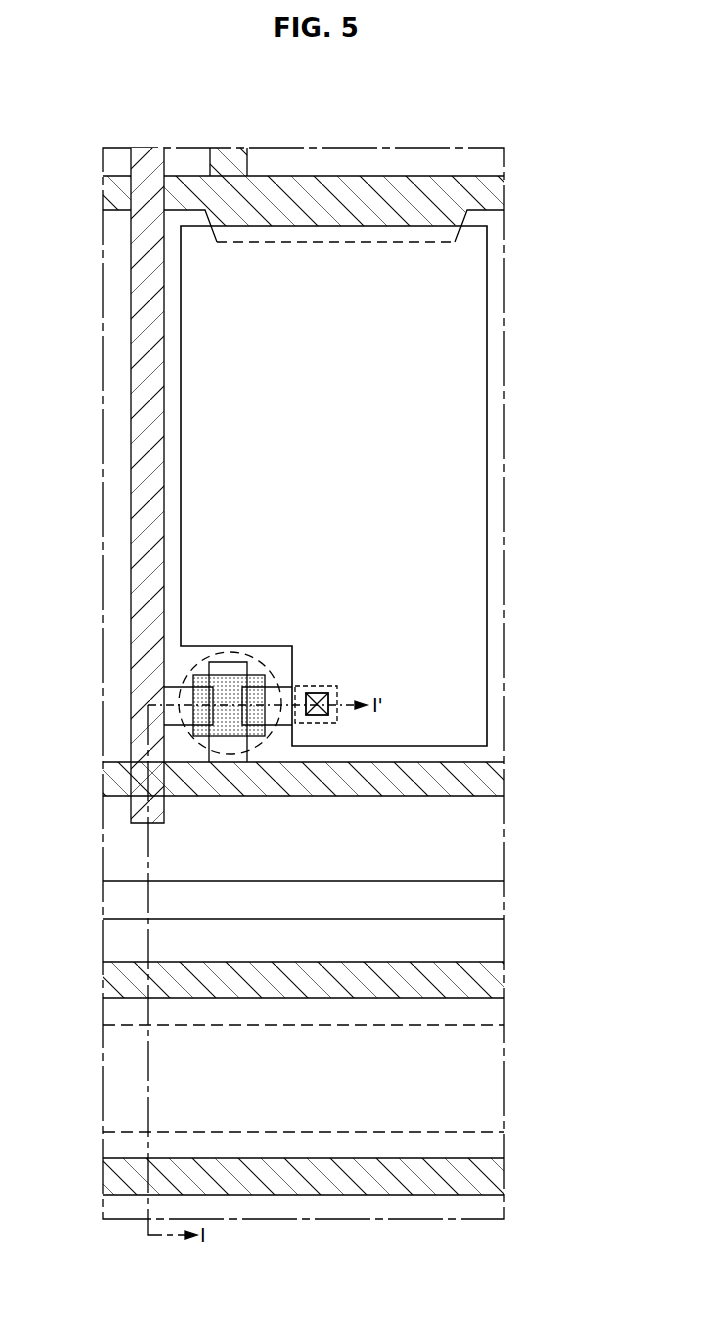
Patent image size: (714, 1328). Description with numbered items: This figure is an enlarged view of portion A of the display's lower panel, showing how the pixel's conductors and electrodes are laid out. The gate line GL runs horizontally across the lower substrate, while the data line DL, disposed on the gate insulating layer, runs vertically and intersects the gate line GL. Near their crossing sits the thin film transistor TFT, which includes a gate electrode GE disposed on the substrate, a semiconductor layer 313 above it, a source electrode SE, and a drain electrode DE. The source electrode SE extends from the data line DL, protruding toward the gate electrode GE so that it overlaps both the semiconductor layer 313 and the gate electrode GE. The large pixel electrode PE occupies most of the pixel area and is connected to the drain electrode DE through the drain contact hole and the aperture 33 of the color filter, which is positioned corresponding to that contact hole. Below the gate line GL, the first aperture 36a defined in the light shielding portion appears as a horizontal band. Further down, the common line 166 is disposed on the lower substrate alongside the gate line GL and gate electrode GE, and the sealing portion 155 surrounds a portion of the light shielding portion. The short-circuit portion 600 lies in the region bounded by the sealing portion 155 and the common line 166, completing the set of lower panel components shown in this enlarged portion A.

The portion A is at (302, 148).
The pixel electrode PE is at (433, 478).
The data line DL is at (150, 561).
The gate line GL is at (483, 779).
The thin film transistor TFT is at (167, 752).
The gate electrode GE is at (209, 662).
The source electrode SE is at (205, 741).
The drain electrode DE is at (243, 727).
The semiconductor layer 313 is at (232, 740).
The aperture 33 is at (317, 717).
The first aperture 36a is at (468, 903).
The sealing portion 155 is at (125, 1013).
The common line 166 is at (480, 978).
The short-circuit portion 600 is at (314, 1081).